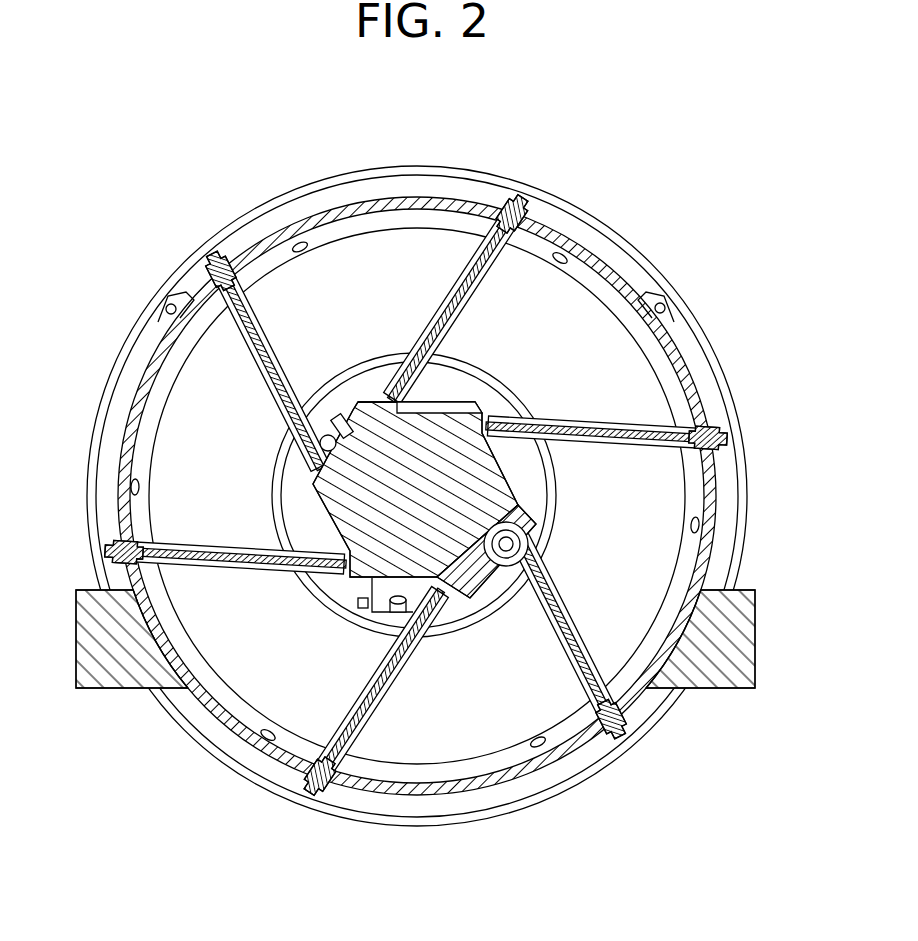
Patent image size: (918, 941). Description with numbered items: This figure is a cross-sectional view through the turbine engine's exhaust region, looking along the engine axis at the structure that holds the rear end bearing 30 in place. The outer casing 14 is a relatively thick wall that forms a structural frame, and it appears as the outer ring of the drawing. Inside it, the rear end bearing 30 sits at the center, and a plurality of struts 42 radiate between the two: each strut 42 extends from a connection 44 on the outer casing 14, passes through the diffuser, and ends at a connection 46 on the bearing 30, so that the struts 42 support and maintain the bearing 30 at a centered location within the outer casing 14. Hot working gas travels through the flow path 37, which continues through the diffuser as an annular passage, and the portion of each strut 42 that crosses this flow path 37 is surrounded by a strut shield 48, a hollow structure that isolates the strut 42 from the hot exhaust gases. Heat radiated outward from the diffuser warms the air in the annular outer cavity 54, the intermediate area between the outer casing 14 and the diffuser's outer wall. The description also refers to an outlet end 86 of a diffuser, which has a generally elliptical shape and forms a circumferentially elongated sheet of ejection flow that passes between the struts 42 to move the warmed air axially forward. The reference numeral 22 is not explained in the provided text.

The outer casing 14 is at (298, 182).
The outer shell 22 is at (413, 165).
The rear end bearing 30 is at (473, 574).
The flow path 37 is at (626, 599).
The struts 42 is at (447, 291).
The connection 44 is at (519, 204).
The connection 46 is at (378, 412).
The strut shield 48 is at (540, 430).
The annular outer cavity 54 is at (148, 420).
The outlet end 86 is at (302, 256).